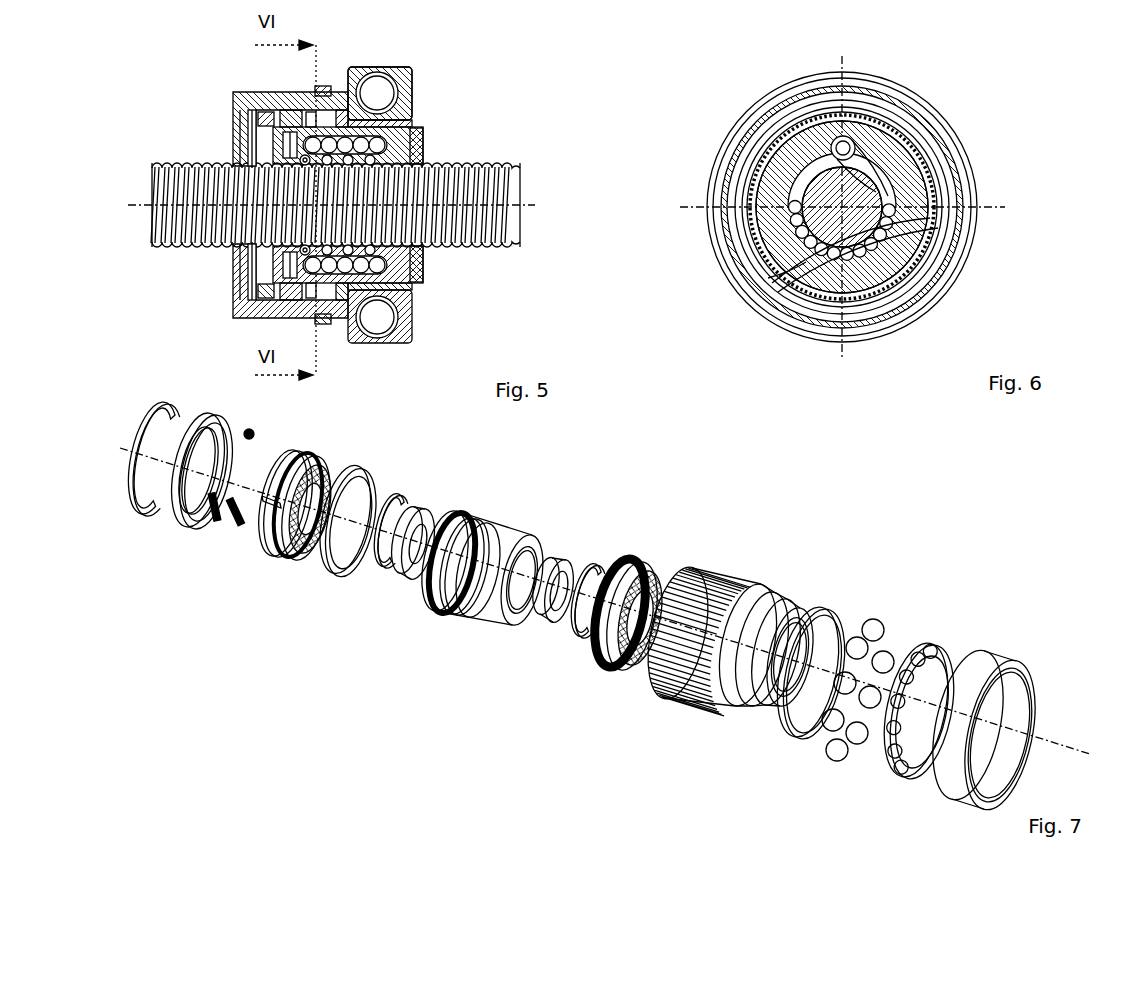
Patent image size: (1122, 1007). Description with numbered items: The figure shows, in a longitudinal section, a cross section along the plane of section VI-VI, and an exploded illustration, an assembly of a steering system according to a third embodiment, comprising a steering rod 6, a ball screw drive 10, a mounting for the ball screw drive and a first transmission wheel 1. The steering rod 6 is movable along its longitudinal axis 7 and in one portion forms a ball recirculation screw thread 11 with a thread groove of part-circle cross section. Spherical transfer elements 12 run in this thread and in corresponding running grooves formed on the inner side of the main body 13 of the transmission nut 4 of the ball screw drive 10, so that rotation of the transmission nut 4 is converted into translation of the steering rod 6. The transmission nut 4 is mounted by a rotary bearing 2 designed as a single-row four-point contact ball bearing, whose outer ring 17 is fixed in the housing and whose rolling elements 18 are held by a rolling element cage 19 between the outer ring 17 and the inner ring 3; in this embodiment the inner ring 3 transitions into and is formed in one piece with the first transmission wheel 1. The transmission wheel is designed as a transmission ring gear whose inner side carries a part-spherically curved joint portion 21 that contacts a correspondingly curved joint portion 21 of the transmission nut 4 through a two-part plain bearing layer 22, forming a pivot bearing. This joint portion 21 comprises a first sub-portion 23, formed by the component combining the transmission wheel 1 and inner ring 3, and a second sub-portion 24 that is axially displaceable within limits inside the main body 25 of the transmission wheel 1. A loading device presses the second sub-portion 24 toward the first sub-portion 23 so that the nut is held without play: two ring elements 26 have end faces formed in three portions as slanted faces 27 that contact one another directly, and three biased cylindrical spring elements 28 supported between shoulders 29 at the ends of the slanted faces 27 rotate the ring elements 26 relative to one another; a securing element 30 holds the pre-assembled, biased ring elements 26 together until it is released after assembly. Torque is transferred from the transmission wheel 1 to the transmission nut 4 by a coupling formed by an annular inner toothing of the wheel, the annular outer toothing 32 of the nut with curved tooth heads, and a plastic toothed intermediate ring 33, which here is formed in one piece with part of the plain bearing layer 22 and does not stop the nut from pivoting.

In FIG. 5, the first transmission wheel 1 is at (230, 125).
In FIG. 7, the first transmission wheel 1 is at (729, 655).
In FIG. 5, the rotary bearing 2 is at (411, 78).
In FIG. 5, the inner ring 3 is at (408, 126).
In FIG. 7, the inner ring 3 is at (792, 610).
In FIG. 5, the transmission nut 4 is at (428, 272).
In FIG. 7, the transmission nut 4 is at (438, 644).
In FIG. 5, the steering rod 6 is at (311, 220).
In FIG. 6, the steering rod 6 is at (935, 257).
In FIG. 5, the longitudinal axis 7 is at (142, 205).
In FIG. 7, the longitudinal axis 7 is at (1026, 746).
In FIG. 5, the ball screw drive 10 is at (428, 150).
In FIG. 5, the ball recirculation screw thread 11 is at (492, 252).
In FIG. 5, the spherical transfer elements 12 is at (380, 320).
In FIG. 6, the spherical transfer elements 12 is at (772, 286).
In FIG. 5, the main body 13 is at (372, 272).
In FIG. 6, the main body 13 is at (757, 246).
In FIG. 7, the main body 13 is at (459, 585).
In FIG. 5, the outer ring 17 is at (406, 82).
In FIG. 6, the outer ring 17 is at (924, 112).
In FIG. 7, the outer ring 17 is at (1003, 652).
In FIG. 5, the rolling elements 18 is at (392, 97).
In FIG. 7, the rolling elements 18 is at (885, 660).
In FIG. 7, the rolling element cage 19 is at (932, 646).
In FIG. 5, the joint portion 21 is at (345, 325).
In FIG. 7, the joint portion 21 is at (432, 618).
In FIG. 5, the plain bearing layer 22 is at (258, 118).
In FIG. 7, the plain bearing layer 22 is at (302, 560).
In FIG. 5, the first sub-portion 23 is at (350, 108).
In FIG. 7, the first sub-portion 23 is at (462, 615).
In FIG. 5, the second sub-portion 24 is at (290, 118).
In FIG. 7, the second sub-portion 24 is at (310, 562).
In FIG. 5, the main body 25 is at (248, 135).
In FIG. 6, the main body 25 is at (742, 133).
In FIG. 7, the main body 25 is at (712, 700).
In FIG. 5, the ring elements 26 is at (258, 280).
In FIG. 7, the ring elements 26 is at (188, 524).
In FIG. 7, the slanted faces 27 is at (197, 472).
In FIG. 7, the spring elements 28 is at (238, 498).
In FIG. 7, the shoulders 29 is at (220, 422).
In FIG. 7, the securing element 30 is at (278, 490).
In FIG. 7, the outer toothing 32 is at (484, 512).
In FIG. 5, the toothed intermediate ring 33 is at (318, 92).
In FIG. 6, the toothed intermediate ring 33 is at (752, 174).
In FIG. 7, the toothed intermediate ring 33 is at (638, 562).